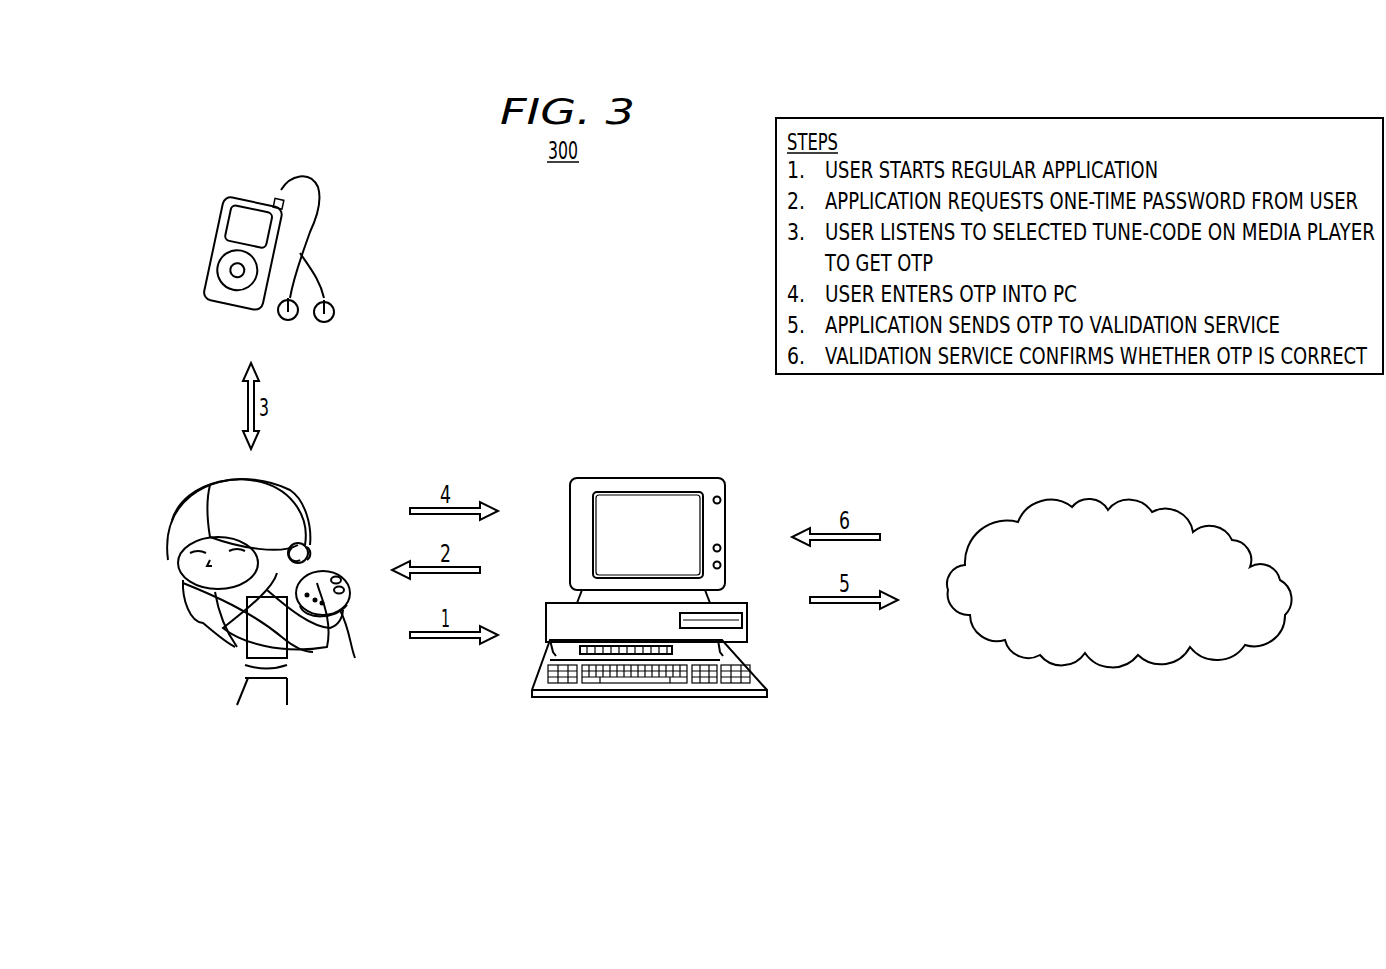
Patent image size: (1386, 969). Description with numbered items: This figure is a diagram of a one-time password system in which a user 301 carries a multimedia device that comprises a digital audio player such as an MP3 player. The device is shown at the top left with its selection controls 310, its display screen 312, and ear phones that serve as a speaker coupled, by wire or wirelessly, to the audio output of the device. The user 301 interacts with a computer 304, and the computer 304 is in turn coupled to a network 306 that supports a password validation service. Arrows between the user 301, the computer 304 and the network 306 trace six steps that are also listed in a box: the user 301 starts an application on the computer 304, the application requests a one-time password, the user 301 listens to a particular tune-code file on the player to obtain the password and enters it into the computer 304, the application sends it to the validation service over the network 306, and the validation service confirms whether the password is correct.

The user 301 is at (200, 649).
The computer 304 is at (655, 478).
The network 306 is at (1215, 522).
The selection controls 310 is at (228, 271).
The display screen 312 is at (253, 213).